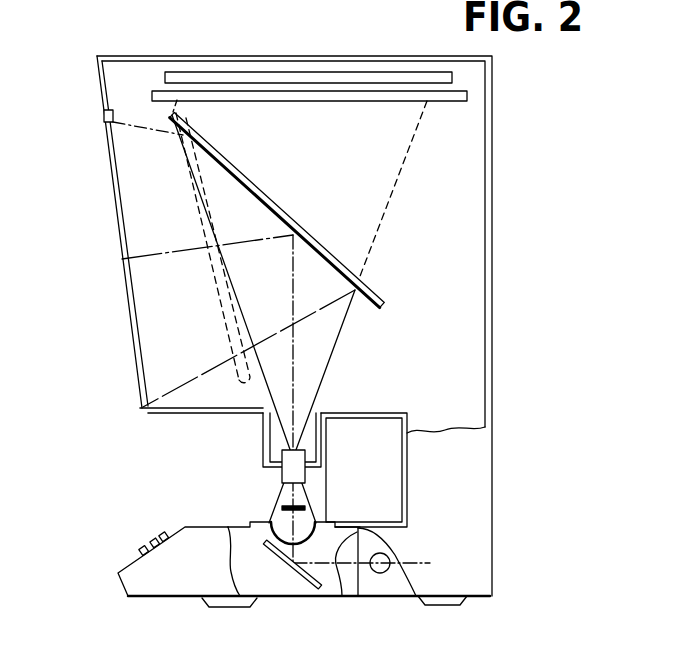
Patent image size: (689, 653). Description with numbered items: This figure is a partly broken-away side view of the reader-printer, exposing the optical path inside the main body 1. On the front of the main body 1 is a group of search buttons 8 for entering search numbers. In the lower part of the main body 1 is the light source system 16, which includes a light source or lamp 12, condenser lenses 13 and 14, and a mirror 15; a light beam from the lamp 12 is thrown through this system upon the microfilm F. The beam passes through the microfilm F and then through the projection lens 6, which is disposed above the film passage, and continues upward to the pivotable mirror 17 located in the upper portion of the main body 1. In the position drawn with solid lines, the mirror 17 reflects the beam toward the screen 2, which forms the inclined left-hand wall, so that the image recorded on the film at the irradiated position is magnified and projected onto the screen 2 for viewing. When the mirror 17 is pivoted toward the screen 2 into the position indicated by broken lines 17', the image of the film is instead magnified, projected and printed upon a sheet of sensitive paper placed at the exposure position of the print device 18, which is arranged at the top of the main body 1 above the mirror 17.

The main body 1 is at (490, 300).
The screen 2 is at (130, 323).
The projection lens 6 is at (306, 477).
The search buttons 8 is at (148, 537).
The lamp 12 is at (380, 573).
The condenser lens 13 is at (343, 578).
The condenser lens 14 is at (278, 531).
The mirror 15 is at (300, 588).
The light source system 16 is at (287, 583).
The pivotable mirror 17 is at (277, 209).
The pivoted position of mirror 17' is at (181, 248).
The print device 18 is at (415, 72).
The microfilm F is at (305, 511).